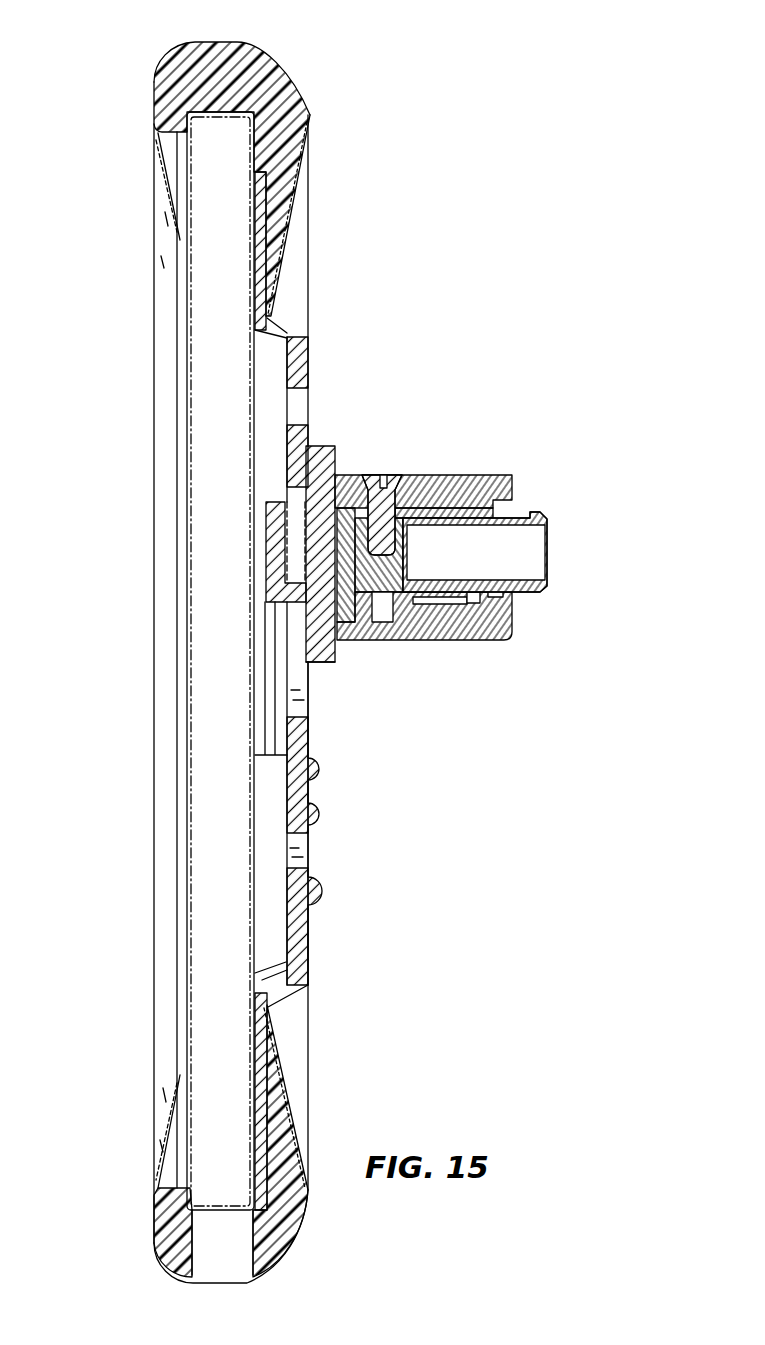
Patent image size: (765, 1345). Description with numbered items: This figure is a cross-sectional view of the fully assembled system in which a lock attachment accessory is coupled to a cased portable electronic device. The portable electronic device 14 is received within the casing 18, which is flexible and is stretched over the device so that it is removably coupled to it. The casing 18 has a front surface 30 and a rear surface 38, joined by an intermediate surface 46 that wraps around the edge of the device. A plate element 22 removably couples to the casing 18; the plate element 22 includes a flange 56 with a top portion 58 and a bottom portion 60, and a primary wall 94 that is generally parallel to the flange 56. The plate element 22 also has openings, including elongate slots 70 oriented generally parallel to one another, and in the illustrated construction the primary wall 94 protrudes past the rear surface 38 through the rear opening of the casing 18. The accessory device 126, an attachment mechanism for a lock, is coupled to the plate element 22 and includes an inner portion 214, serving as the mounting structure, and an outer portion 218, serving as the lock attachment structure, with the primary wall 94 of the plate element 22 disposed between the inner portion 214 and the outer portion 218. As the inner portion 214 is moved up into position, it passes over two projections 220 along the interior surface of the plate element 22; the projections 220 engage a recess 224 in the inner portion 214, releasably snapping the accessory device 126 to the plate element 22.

The portable electronic device 14 is at (217, 278).
The casing 18 is at (297, 83).
The plate element 22 is at (245, 652).
The front surface 30 is at (160, 168).
The rear surface 38 is at (306, 168).
The intermediate surface 46 is at (213, 42).
The flange 56 is at (270, 252).
The top portion 58 is at (266, 210).
The bottom portion 60 is at (262, 1112).
The elongate slots 70 is at (298, 408).
The primary wall 94 is at (288, 452).
The accessory device 126 is at (453, 473).
The inner portion 214 is at (194, 620).
The outer portion 218 is at (325, 661).
The projections 220 is at (347, 562).
The recess 224 is at (262, 545).